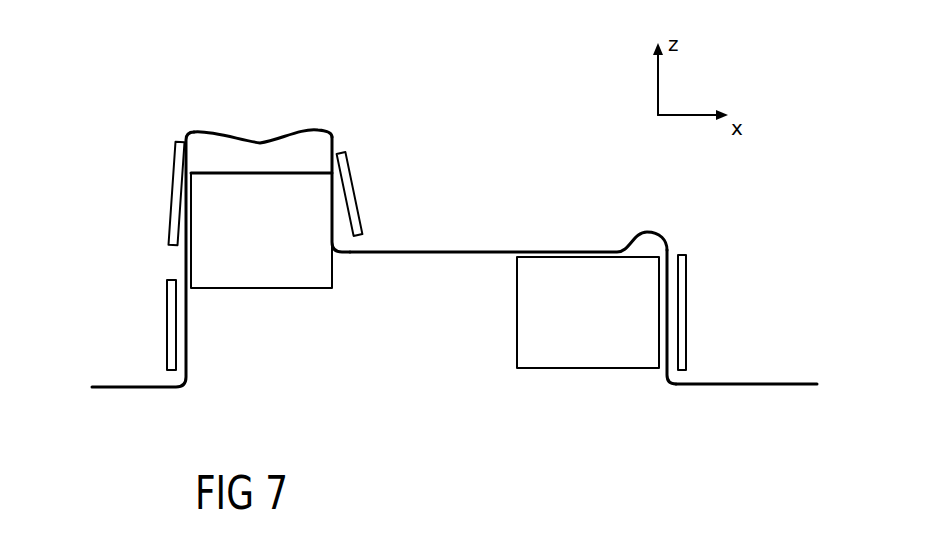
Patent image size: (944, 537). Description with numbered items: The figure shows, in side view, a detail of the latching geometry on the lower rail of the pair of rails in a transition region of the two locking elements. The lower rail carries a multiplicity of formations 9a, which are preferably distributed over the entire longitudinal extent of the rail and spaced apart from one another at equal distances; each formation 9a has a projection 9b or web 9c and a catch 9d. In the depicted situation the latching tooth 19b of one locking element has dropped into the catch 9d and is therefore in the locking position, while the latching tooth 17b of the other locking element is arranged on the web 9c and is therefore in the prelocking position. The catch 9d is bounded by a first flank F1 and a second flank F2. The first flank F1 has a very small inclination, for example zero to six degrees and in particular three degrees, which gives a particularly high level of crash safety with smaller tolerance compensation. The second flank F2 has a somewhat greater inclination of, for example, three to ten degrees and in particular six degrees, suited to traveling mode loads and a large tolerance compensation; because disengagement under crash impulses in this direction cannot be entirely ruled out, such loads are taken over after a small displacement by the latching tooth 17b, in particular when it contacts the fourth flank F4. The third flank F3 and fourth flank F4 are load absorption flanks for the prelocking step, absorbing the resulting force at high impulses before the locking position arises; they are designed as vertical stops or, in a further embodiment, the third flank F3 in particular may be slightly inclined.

The formation 9a is at (454, 270).
The projection 9b is at (755, 388).
The web 9c is at (418, 255).
The catch 9d is at (258, 142).
The latching tooth 17b is at (588, 353).
The latching tooth 19b is at (262, 270).
The first flank F1 is at (168, 187).
The second flank F2 is at (358, 193).
The third flank F3 is at (167, 327).
The fourth flank F4 is at (687, 315).